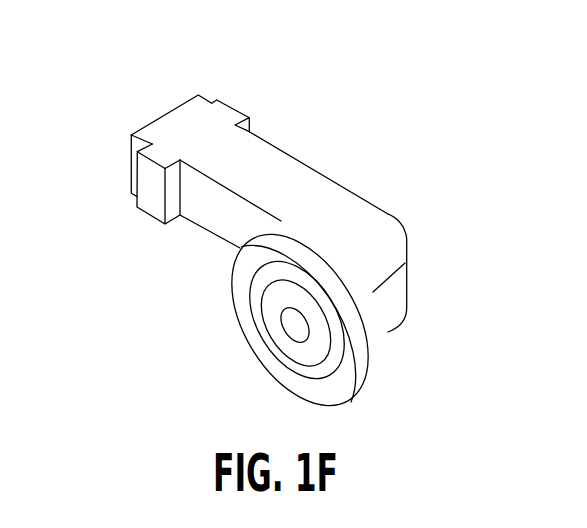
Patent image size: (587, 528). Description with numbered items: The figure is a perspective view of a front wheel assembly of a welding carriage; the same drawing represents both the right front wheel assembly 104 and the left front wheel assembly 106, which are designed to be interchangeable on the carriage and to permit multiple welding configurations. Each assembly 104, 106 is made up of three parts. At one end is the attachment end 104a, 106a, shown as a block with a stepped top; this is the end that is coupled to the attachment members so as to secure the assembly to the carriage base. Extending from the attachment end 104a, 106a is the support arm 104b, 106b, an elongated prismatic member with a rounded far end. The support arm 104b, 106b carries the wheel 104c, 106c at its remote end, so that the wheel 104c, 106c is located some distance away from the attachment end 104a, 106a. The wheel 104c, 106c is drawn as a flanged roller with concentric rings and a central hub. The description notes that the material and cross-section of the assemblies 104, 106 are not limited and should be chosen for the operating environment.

The right front wheel assembly 104 is at (275, 241).
The left front wheel assembly 106 is at (341, 126).
The attachment end 104a is at (207, 179).
The attachment end 106a is at (152, 123).
The support arm 104b is at (120, 252).
The support arm 106b is at (202, 230).
The wheel 104c is at (373, 334).
The wheel 106c is at (353, 399).